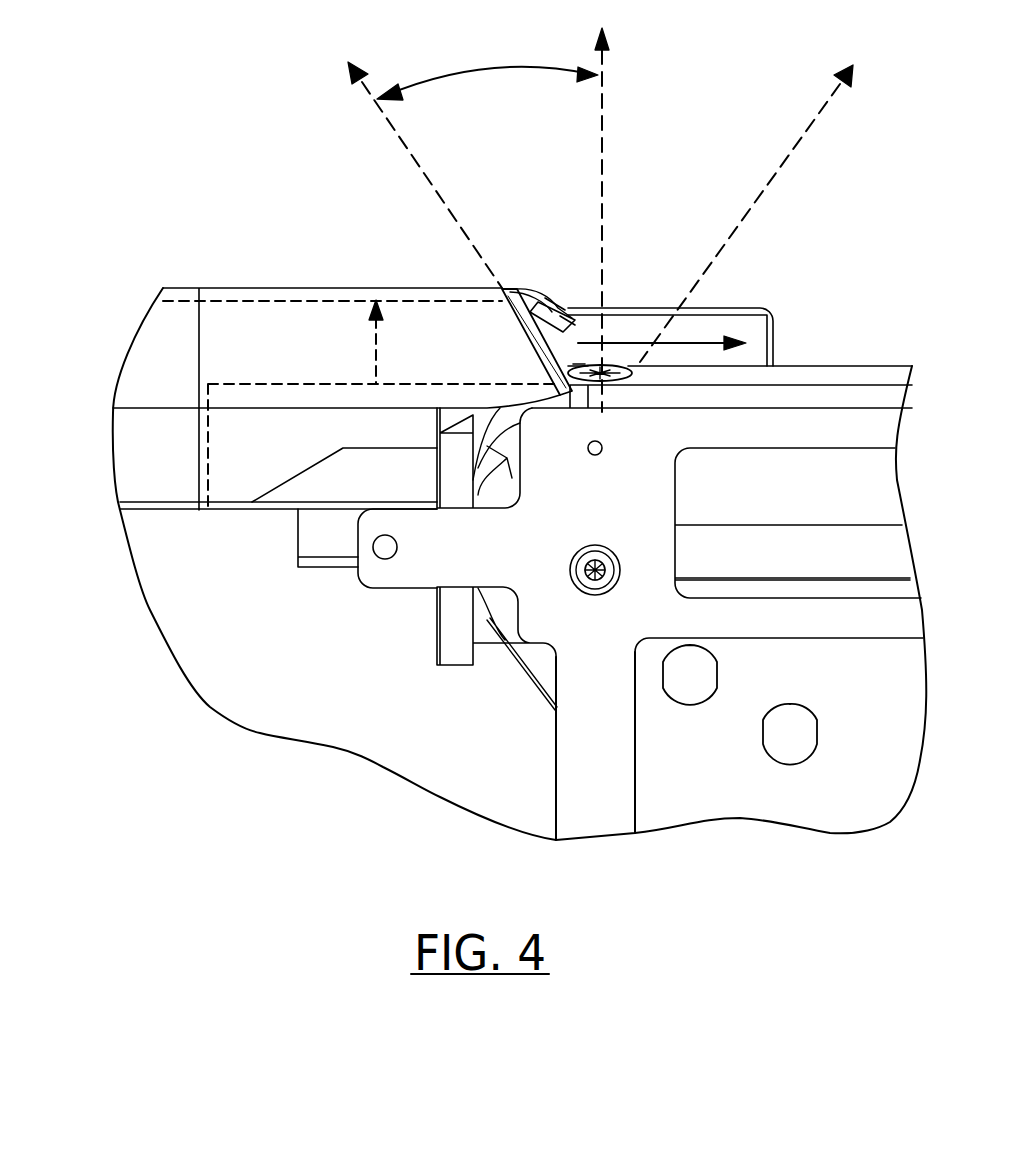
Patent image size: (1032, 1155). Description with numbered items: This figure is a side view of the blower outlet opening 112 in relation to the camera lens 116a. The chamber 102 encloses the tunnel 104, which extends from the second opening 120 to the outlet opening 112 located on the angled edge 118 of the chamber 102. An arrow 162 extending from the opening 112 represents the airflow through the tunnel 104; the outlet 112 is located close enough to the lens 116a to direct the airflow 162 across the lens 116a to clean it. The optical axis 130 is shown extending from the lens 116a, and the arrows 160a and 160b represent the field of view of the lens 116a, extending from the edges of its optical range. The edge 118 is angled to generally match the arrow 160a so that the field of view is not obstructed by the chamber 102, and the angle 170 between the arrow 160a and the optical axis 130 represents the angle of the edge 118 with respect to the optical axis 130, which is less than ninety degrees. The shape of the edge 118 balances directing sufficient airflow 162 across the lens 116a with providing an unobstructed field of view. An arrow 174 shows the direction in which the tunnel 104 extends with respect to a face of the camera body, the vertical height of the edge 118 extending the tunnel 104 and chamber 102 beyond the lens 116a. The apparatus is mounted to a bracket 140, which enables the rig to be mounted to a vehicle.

The chamber 102 is at (300, 289).
The tunnel 104 is at (137, 462).
The outlet opening 112 is at (548, 306).
The camera lens 116a is at (629, 387).
The angled edge 118 is at (512, 290).
The second opening 120 is at (160, 510).
The optical axis 130 is at (602, 118).
The bracket 140 is at (563, 770).
The arrow 160a is at (414, 158).
The arrow 160b is at (794, 149).
The arrow 162 is at (722, 342).
The angle 170 is at (489, 63).
The arrow 174 is at (375, 373).